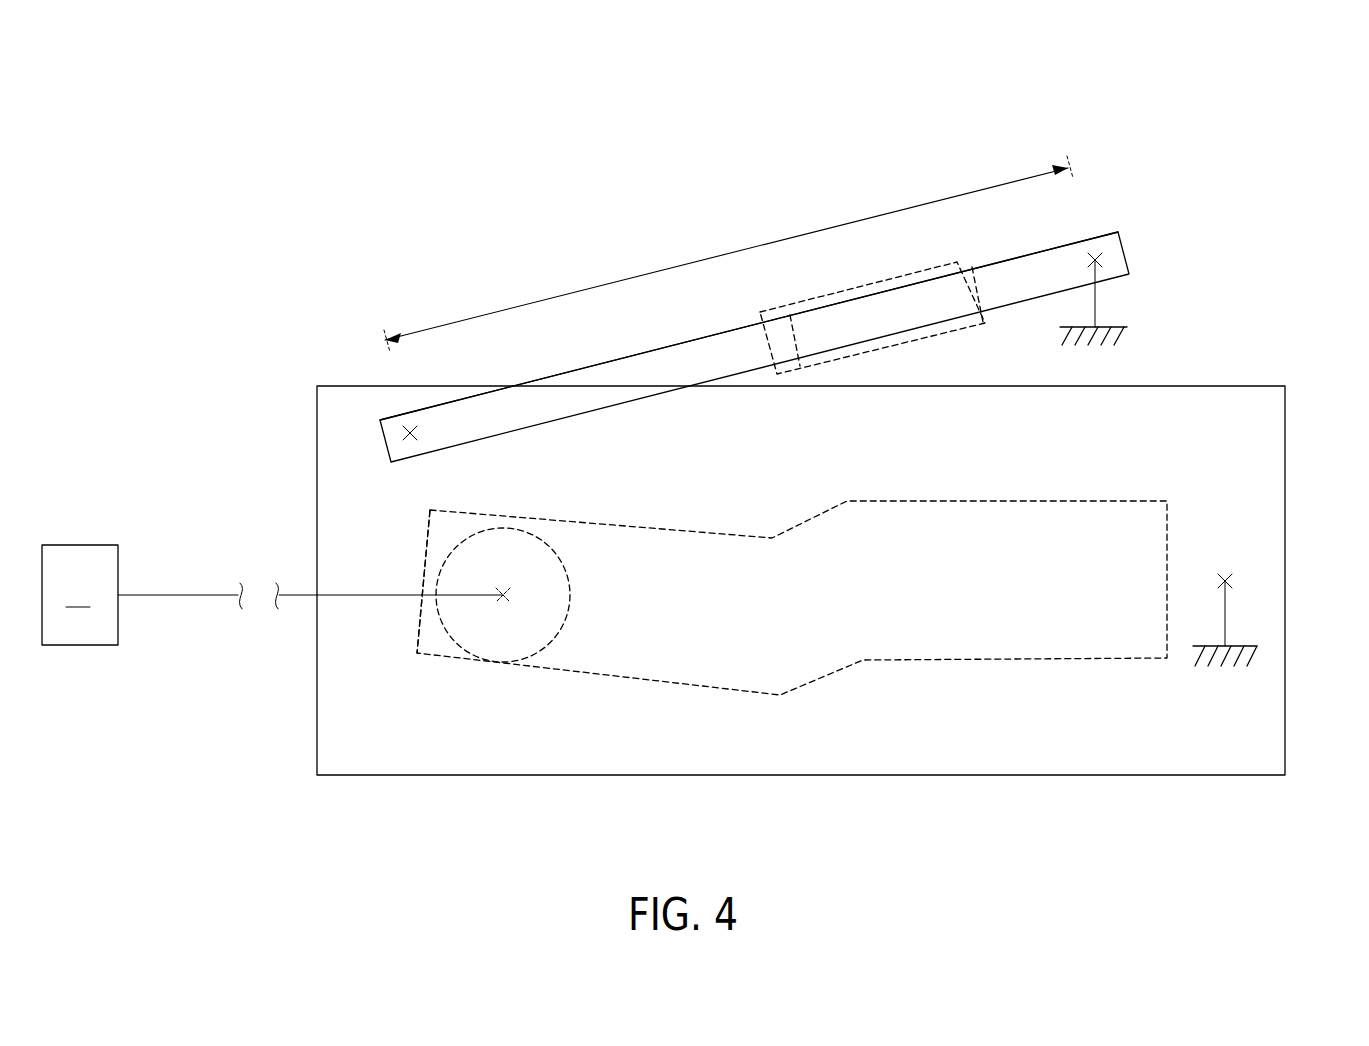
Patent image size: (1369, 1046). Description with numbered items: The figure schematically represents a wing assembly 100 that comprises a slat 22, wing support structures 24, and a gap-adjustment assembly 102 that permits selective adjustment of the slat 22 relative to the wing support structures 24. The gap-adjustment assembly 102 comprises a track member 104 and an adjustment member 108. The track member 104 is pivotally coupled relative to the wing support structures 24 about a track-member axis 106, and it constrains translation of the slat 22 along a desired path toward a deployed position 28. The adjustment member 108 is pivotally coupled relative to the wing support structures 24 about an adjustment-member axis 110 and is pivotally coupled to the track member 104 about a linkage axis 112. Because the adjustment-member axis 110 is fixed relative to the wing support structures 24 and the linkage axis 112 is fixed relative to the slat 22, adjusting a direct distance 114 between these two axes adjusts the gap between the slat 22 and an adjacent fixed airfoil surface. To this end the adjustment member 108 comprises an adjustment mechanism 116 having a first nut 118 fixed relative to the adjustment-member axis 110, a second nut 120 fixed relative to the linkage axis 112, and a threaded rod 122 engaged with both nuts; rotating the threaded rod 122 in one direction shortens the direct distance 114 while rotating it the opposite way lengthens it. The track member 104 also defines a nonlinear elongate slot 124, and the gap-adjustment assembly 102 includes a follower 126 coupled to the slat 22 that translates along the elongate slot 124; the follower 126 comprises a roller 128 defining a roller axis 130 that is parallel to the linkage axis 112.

The slat 22 is at (80, 595).
The wing support structures 24 is at (1107, 327).
The deployed position 28 is at (128, 497).
The wing assembly 100 is at (292, 117).
The gap-adjustment assembly 102 is at (451, 215).
The track member 104 is at (1233, 385).
The track-member axis 106 is at (1230, 570).
The adjustment member 108 is at (693, 337).
The adjustment-member axis 110 is at (1097, 260).
The linkage axis 112 is at (408, 431).
The direct distance 114 is at (687, 263).
The adjustment mechanism 116 is at (860, 283).
The first nut 118 is at (958, 262).
The second nut 120 is at (773, 308).
The threaded rod 122 is at (900, 270).
The elongate slot 124 is at (677, 532).
The follower 126 is at (563, 627).
The roller 128 is at (450, 633).
The roller axis 130 is at (567, 580).